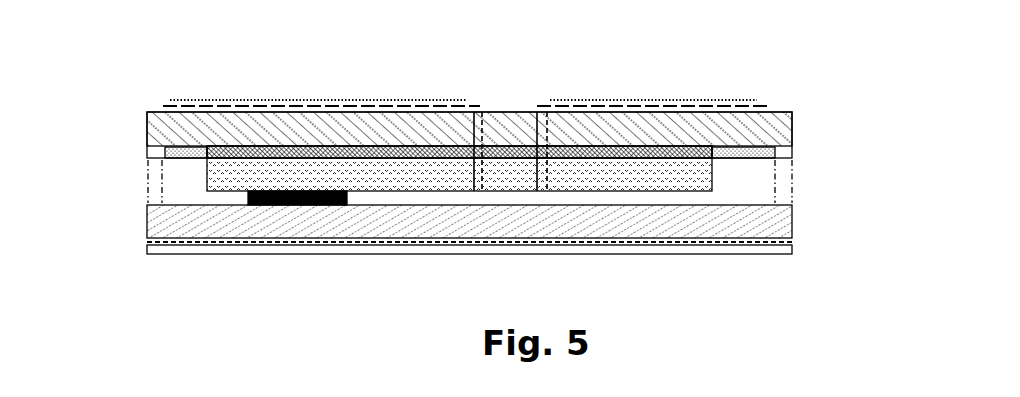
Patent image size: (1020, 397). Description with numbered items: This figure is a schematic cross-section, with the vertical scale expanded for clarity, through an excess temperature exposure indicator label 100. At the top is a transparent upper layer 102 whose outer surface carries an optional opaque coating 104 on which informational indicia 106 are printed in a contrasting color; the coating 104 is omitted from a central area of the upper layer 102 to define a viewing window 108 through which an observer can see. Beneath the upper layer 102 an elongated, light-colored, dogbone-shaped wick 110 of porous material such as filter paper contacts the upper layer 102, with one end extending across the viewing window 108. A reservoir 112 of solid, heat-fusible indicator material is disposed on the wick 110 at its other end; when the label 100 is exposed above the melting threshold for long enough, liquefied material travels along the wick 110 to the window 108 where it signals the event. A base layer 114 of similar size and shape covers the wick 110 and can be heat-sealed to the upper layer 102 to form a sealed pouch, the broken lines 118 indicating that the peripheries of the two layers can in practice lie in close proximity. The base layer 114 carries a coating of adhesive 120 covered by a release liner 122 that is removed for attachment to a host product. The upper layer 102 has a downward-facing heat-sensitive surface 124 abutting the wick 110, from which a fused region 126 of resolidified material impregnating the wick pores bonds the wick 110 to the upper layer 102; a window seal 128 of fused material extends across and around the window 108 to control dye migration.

The indicator label 100 is at (126, 81).
The upper layer 102 is at (786, 127).
The opaque coating 104 is at (772, 104).
The informational indicia 106 is at (717, 100).
The viewing window 108 is at (479, 85).
The wick 110 is at (659, 182).
The reservoir 112 is at (297, 205).
The base layer 114 is at (775, 226).
The broken lines 118 is at (148, 188).
The adhesive 120 is at (148, 243).
The release liner 122 is at (211, 248).
The heat-sensitive surface 124 is at (183, 152).
The fused region 126 is at (712, 159).
The window seal 128 is at (550, 123).